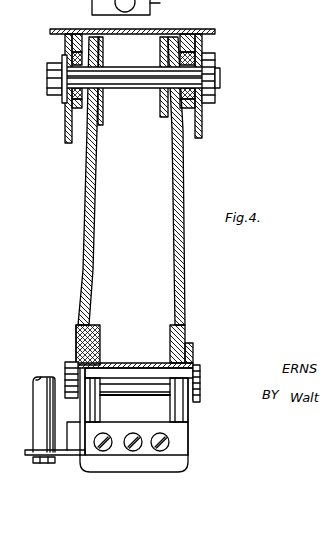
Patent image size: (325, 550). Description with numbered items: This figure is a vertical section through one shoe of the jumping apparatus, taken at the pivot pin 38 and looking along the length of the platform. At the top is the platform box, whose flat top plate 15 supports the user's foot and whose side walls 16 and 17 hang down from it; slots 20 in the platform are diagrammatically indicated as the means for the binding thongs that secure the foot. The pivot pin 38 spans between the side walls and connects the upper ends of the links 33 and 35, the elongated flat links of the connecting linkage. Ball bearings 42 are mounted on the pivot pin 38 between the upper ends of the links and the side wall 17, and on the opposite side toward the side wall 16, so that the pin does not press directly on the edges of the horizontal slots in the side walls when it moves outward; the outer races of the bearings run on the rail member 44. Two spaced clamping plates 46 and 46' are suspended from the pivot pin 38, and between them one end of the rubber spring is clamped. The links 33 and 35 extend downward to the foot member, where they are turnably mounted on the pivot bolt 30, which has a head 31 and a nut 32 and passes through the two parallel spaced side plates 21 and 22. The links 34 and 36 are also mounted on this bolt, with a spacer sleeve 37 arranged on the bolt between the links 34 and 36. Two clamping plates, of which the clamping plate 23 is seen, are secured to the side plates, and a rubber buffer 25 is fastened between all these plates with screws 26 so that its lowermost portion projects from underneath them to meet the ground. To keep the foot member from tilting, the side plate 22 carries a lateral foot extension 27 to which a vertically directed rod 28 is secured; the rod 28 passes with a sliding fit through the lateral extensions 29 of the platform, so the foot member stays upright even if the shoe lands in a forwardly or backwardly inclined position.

The top plate 15 is at (200, 28).
The side wall 16 is at (66, 139).
The side wall 17 is at (203, 124).
The slots 20 is at (77, 7).
The side plate 21 is at (193, 348).
The side plate 22 is at (78, 340).
The clamping plate 23 is at (180, 438).
The rubber buffer 25 is at (175, 467).
The screws 26 is at (169, 445).
The lateral foot extension 27 is at (28, 453).
The rod 28 is at (38, 408).
The lateral extensions 29 is at (163, 5).
The pivot bolt 30 is at (113, 373).
The head 31 is at (197, 378).
The nut 32 is at (66, 367).
The link 33 is at (181, 204).
The link 34 is at (170, 330).
The link 35 is at (87, 179).
The link 36 is at (95, 330).
The spacer sleeve 37 is at (122, 394).
The pivot pin 38 is at (220, 76).
The ball bearings 42 is at (66, 113).
The rail member 44 is at (67, 44).
The clamping plate 46 is at (155, 96).
The clamping plate 46' is at (111, 96).